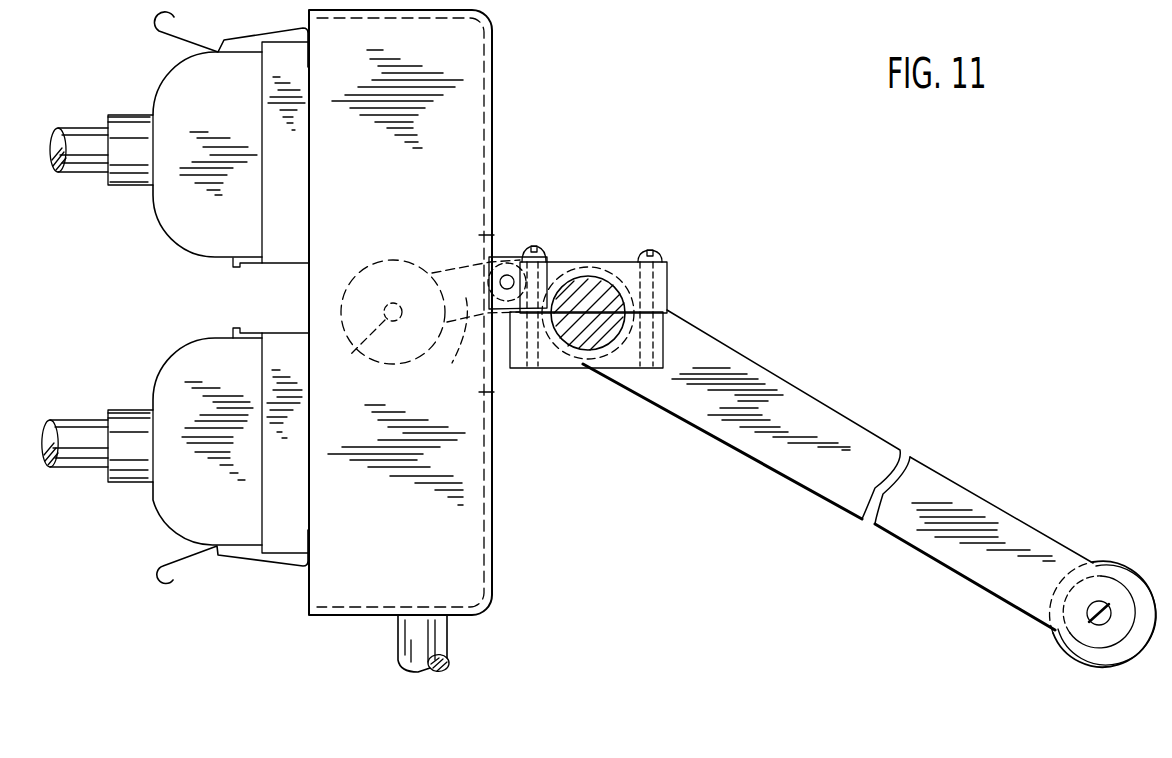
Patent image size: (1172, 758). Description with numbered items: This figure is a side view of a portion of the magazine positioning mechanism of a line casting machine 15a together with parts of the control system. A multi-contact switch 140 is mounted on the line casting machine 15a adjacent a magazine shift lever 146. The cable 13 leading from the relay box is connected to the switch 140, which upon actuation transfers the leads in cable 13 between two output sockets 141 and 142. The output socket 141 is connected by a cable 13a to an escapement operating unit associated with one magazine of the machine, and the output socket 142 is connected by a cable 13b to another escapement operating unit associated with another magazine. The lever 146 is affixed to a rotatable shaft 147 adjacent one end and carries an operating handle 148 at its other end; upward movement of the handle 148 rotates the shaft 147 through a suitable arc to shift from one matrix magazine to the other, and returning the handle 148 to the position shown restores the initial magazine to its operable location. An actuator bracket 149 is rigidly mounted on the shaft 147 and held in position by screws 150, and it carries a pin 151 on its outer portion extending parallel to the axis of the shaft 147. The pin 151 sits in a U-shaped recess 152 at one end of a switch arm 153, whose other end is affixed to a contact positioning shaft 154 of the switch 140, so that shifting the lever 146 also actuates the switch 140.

The cable 13 is at (435, 645).
The cable 13a is at (68, 437).
The cable 13b is at (73, 140).
The multi-contact switch 140 is at (410, 209).
The output socket 141 is at (282, 350).
The output socket 142 is at (285, 240).
The magazine shift lever 146 is at (805, 408).
The rotatable shaft 147 is at (580, 328).
The operating handle 148 is at (1105, 560).
The actuator bracket 149 is at (548, 367).
The screws 150 is at (642, 255).
The pin 151 is at (512, 278).
The U-shaped recess 152 is at (495, 277).
The switch arm 153 is at (463, 335).
The contact positioning shaft 154 is at (391, 318).
The line casting machine 15a is at (1043, 638).